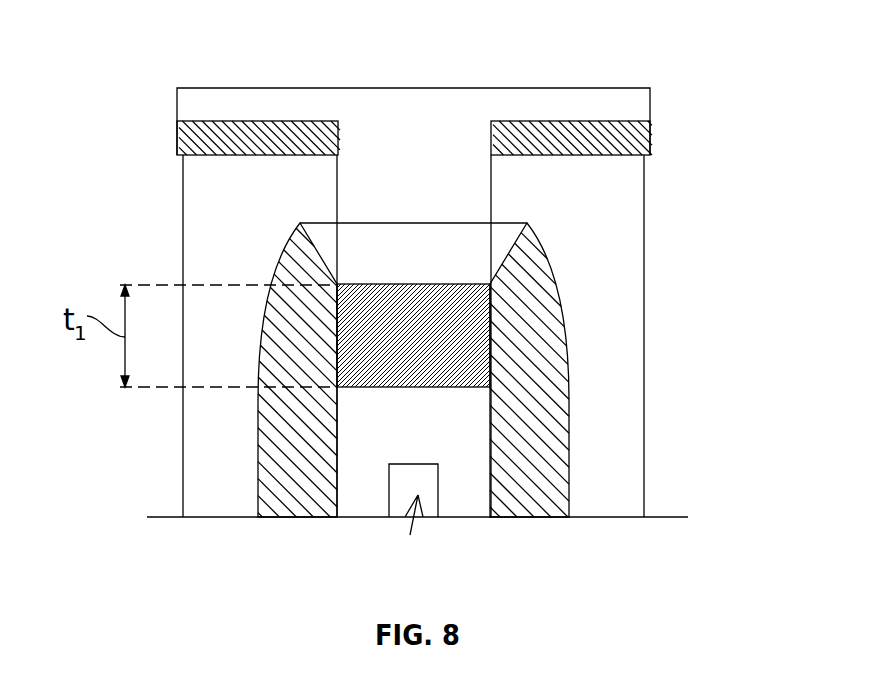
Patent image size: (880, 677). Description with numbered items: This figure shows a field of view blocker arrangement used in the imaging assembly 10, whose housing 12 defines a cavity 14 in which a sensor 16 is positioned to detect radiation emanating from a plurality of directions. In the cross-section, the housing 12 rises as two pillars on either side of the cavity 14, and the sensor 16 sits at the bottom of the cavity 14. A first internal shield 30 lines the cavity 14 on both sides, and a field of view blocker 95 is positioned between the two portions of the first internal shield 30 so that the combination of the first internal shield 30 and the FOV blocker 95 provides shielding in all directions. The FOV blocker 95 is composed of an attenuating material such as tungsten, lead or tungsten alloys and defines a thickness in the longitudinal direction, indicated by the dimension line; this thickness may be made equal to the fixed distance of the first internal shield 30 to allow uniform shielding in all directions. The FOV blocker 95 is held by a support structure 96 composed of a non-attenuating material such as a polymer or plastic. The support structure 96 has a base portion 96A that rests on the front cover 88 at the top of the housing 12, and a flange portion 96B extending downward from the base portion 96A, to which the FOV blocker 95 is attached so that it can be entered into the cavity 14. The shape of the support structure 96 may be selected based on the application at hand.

The imaging assembly 10 is at (683, 39).
The housing 12 is at (647, 230).
The cavity 14 is at (387, 449).
The sensor 16 is at (405, 493).
The first internal shield 30 is at (315, 467).
The front cover 88 is at (652, 137).
The field of view (FOV) blocker 95 is at (442, 392).
The support structure 96 is at (434, 112).
The base portion 96A is at (223, 88).
The flange portion 96B is at (440, 186).